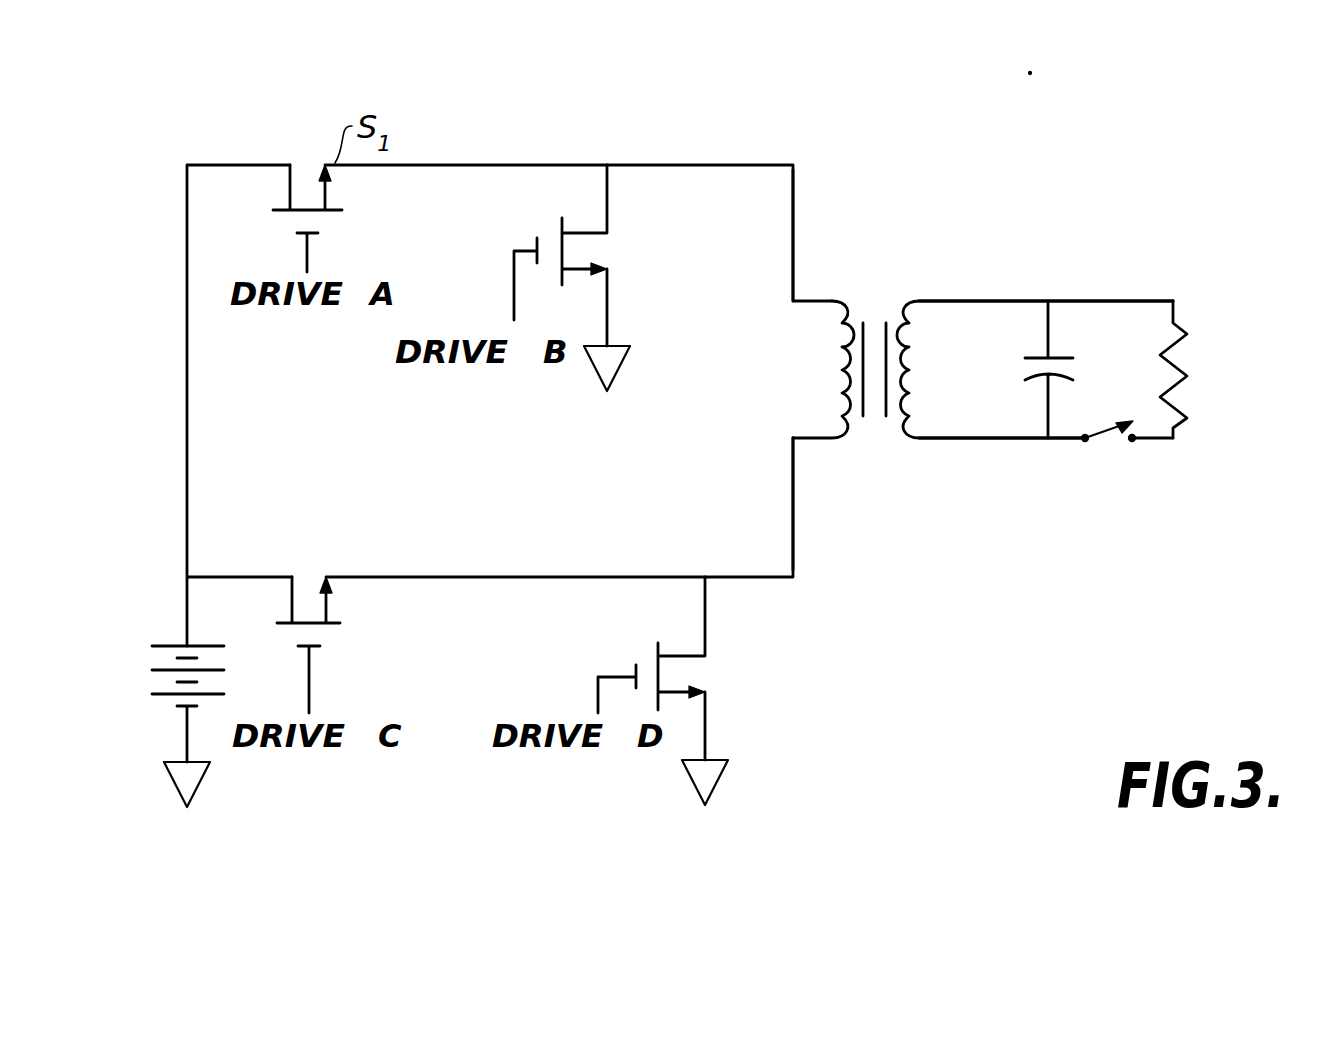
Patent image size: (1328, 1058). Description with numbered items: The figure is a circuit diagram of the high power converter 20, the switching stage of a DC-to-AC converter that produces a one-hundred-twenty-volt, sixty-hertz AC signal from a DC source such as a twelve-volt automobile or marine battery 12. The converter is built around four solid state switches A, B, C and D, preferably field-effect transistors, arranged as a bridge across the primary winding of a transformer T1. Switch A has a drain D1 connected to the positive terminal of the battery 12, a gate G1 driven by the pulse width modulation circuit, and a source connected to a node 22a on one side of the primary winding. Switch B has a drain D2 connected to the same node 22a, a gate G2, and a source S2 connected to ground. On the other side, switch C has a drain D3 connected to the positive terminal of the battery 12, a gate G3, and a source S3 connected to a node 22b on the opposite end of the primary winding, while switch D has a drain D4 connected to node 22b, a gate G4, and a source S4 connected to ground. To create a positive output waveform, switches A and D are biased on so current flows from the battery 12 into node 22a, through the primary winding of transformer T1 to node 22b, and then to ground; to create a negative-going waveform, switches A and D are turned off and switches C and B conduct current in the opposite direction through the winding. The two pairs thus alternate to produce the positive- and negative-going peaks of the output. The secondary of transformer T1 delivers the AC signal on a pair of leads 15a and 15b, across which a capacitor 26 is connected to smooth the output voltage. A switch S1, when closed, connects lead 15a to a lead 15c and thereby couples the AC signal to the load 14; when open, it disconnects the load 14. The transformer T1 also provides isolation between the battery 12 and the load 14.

The battery 12 is at (150, 658).
The load 14 is at (1173, 312).
The lead 15a is at (982, 437).
The lead 15b is at (1000, 300).
The lead 15c is at (1180, 440).
The high power converter 20 is at (1026, 624).
The node 22a is at (793, 180).
The node 22b is at (793, 504).
The capacitor 26 is at (1068, 364).
The transformer T1 is at (983, 350).
The switch S1 is at (1109, 457).
The solid state switch A is at (313, 163).
The solid state switch B is at (605, 250).
The solid state switch C is at (309, 577).
The solid state switch D is at (703, 673).
The drain D1 is at (277, 163).
The gate G1 is at (309, 245).
The drain D2 is at (607, 163).
The gate G2 is at (535, 250).
The source S2 is at (610, 298).
The drain D3 is at (278, 577).
The gate G3 is at (309, 658).
The source S3 is at (338, 577).
The drain D4 is at (701, 577).
The gate G4 is at (634, 677).
The source S4 is at (708, 722).